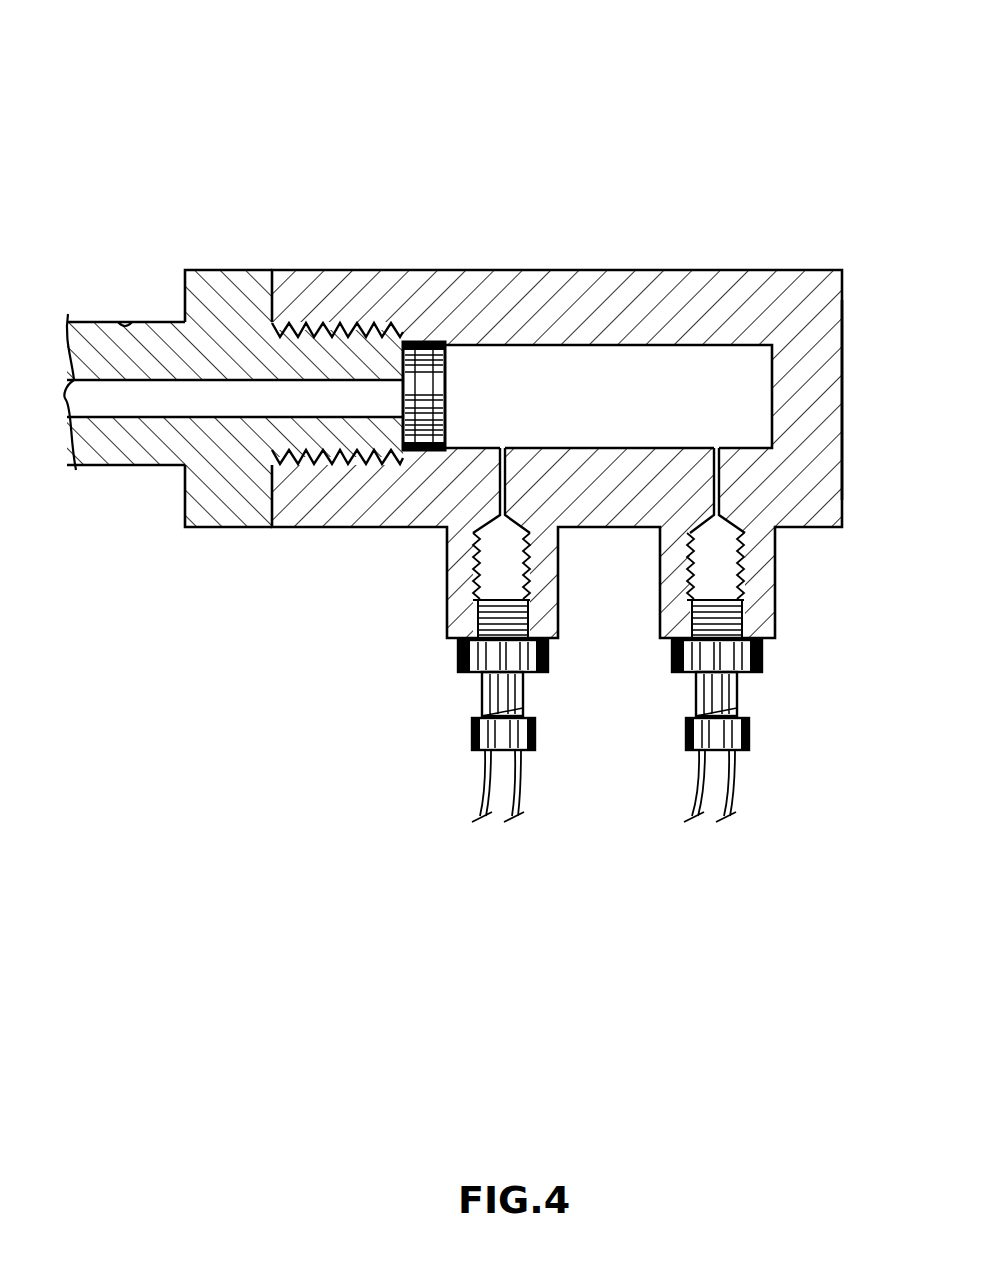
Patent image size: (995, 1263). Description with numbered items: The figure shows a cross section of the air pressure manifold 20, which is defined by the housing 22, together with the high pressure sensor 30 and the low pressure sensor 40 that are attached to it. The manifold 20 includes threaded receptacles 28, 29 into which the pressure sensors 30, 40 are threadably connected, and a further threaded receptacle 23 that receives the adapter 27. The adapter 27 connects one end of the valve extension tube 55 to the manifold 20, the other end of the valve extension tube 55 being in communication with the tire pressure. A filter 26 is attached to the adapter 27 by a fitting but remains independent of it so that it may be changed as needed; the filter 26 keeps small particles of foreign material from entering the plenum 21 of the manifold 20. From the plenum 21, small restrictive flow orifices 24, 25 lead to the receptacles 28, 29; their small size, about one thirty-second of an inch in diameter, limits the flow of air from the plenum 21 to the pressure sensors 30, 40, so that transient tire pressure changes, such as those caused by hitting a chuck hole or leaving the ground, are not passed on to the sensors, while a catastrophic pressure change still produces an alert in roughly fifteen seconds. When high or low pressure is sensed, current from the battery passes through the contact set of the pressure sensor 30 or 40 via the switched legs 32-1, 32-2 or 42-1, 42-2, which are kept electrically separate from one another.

The manifold 20 is at (496, 266).
The plenum 21 is at (670, 372).
The housing 22 is at (817, 403).
The threaded receptacle 23 is at (326, 325).
The restrictive flow orifice 24 is at (720, 480).
The restrictive flow orifice 25 is at (500, 487).
The filter 26 is at (425, 355).
The adapter 27 is at (230, 292).
The threaded receptacle 28 is at (725, 548).
The threaded receptacle 29 is at (495, 572).
The high pressure sensor 30 is at (480, 692).
The low pressure sensor 40 is at (740, 698).
The switched leg 32-1 is at (521, 787).
The switched leg 32-2 is at (483, 787).
The switched leg 42-1 is at (733, 780).
The switched leg 42-2 is at (693, 800).
The valve extension tube 55 is at (160, 397).